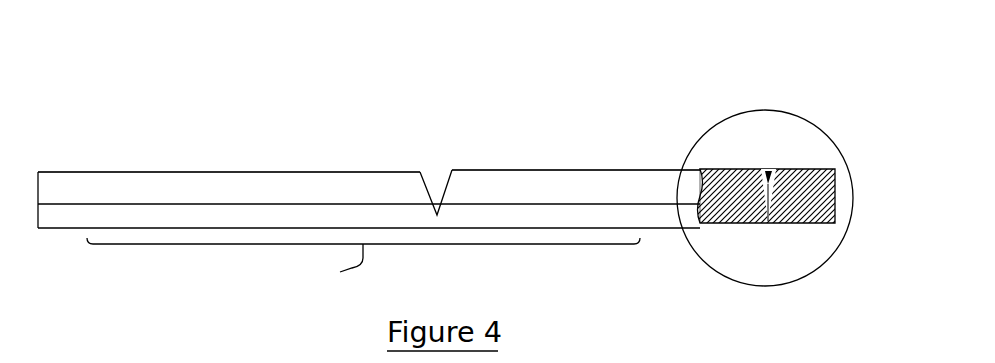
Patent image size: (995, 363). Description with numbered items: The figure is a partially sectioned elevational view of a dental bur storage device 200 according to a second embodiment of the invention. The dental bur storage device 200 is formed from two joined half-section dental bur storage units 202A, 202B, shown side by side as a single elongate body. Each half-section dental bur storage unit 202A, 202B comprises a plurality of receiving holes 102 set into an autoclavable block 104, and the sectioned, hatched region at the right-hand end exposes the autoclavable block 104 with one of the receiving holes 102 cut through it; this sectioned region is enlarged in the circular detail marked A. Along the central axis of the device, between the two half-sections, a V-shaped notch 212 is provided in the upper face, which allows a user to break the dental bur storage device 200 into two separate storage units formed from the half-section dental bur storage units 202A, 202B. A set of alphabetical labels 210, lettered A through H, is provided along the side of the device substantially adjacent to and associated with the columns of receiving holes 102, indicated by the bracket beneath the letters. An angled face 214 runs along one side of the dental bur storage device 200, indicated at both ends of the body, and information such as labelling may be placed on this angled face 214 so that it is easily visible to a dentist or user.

The dental bur storage device 200 is at (695, 92).
The half-section dental bur storage unit 202A is at (259, 106).
The half-section dental bur storage unit 202B is at (604, 102).
The V-shaped notch 212 is at (437, 172).
The angled face 214 is at (70, 195).
The alphabetical labels 210 is at (363, 250).
The autoclavable block 104 is at (728, 227).
The receiving holes 102 is at (783, 190).
The detail view A is at (756, 265).